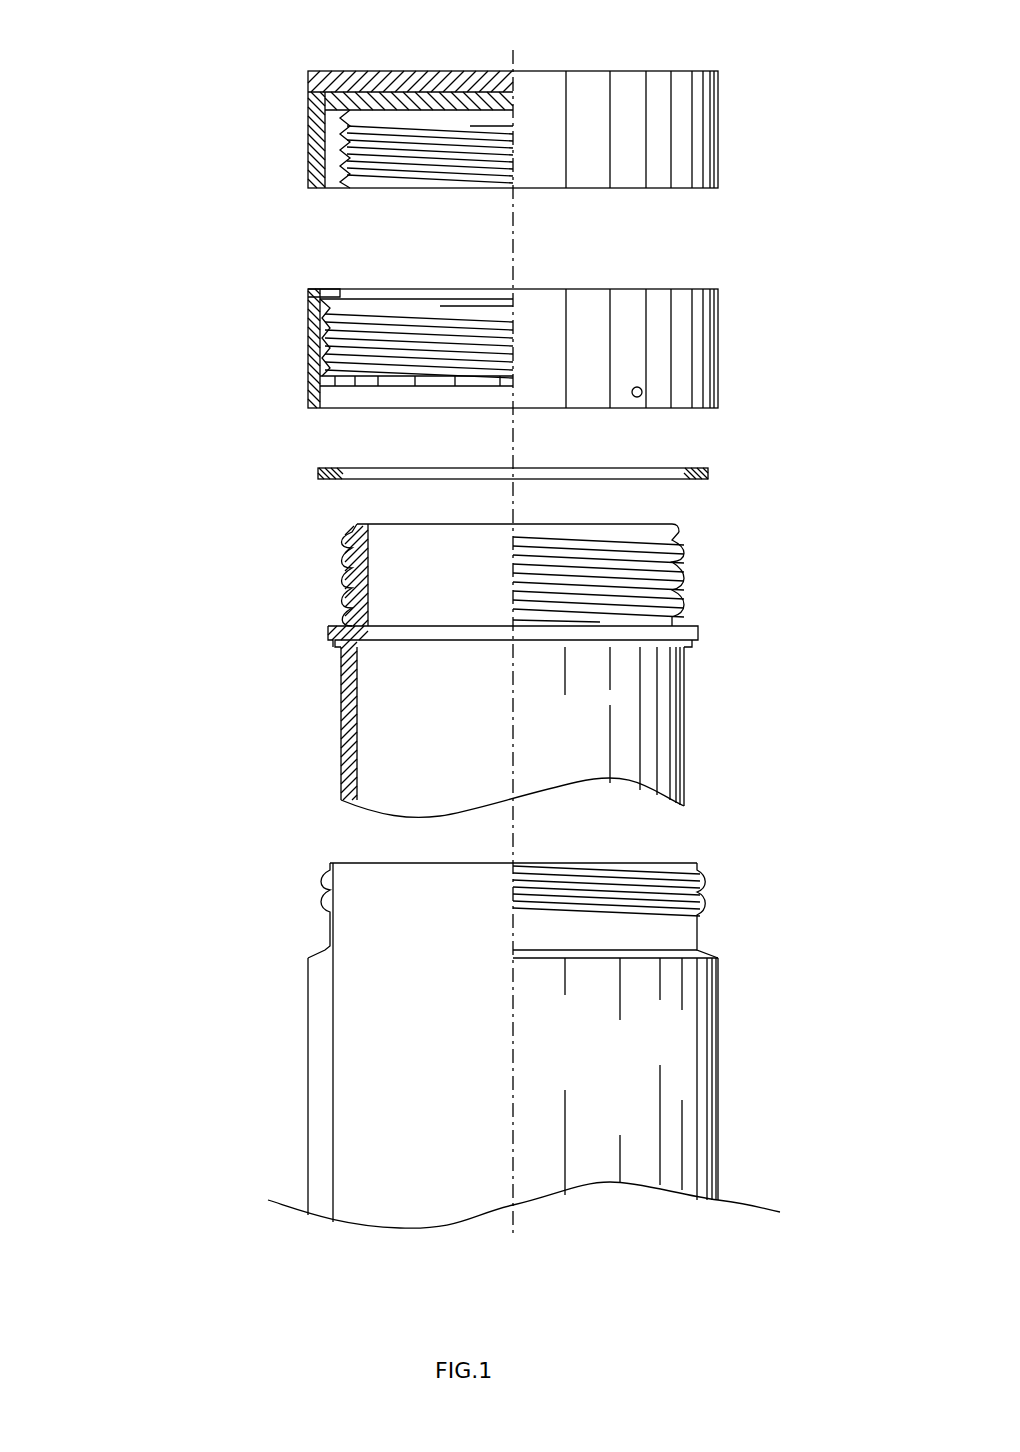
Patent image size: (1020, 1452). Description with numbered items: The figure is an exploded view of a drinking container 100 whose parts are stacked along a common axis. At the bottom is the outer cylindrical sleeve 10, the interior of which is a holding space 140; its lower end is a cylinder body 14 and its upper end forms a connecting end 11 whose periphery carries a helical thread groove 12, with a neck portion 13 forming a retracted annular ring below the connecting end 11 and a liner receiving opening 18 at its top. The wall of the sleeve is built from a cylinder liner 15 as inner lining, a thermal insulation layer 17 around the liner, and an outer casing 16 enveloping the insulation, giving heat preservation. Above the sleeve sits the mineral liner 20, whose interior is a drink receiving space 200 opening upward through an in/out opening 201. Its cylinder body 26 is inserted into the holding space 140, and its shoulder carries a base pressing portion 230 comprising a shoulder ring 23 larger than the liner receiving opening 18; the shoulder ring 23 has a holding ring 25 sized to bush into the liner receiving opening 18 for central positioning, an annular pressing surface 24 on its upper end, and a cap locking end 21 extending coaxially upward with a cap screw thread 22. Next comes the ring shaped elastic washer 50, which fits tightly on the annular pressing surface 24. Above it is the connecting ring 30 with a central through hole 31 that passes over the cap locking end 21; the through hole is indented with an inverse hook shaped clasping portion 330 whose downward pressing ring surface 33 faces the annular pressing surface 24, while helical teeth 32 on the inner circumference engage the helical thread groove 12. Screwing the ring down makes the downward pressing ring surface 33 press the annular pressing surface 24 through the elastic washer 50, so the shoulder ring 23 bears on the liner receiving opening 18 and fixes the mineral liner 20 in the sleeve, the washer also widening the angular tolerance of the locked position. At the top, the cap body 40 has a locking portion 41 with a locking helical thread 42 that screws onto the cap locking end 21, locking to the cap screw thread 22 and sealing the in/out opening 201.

The drinking container 100 is at (152, 682).
The outer cylindrical sleeve 10 is at (507, 1063).
The connecting end 11 is at (434, 1011).
The helical thread groove 12 is at (320, 893).
The neck portion 13 is at (590, 930).
The cylinder body 14 is at (459, 1142).
The cylinder liner 15 is at (333, 1112).
The outer casing 16 is at (310, 1160).
The thermal insulation layer 17 is at (318, 1192).
The liner receiving opening 18 is at (460, 863).
The holding space 140 is at (425, 1195).
The mineral liner 20 is at (518, 633).
The cap locking end 21 is at (466, 541).
The cap screw thread 22 is at (350, 566).
The shoulder ring 23 is at (698, 634).
The annular pressing surface 24 is at (682, 627).
The holding ring 25 is at (690, 646).
The cylinder body 26 is at (685, 710).
The drink receiving space 200 is at (388, 678).
The in/out opening 201 is at (610, 527).
The base pressing portion 230 is at (322, 618).
The connecting ring 30 is at (282, 352).
The through hole 31 is at (410, 289).
The helical teeth 32 is at (500, 330).
The downward pressing ring surface 33 is at (383, 289).
The clasping portion 330 is at (327, 290).
The cap body 40 is at (282, 103).
The locking portion 41 is at (400, 130).
The locking helical thread 42 is at (452, 132).
The elastic washer 50 is at (708, 468).